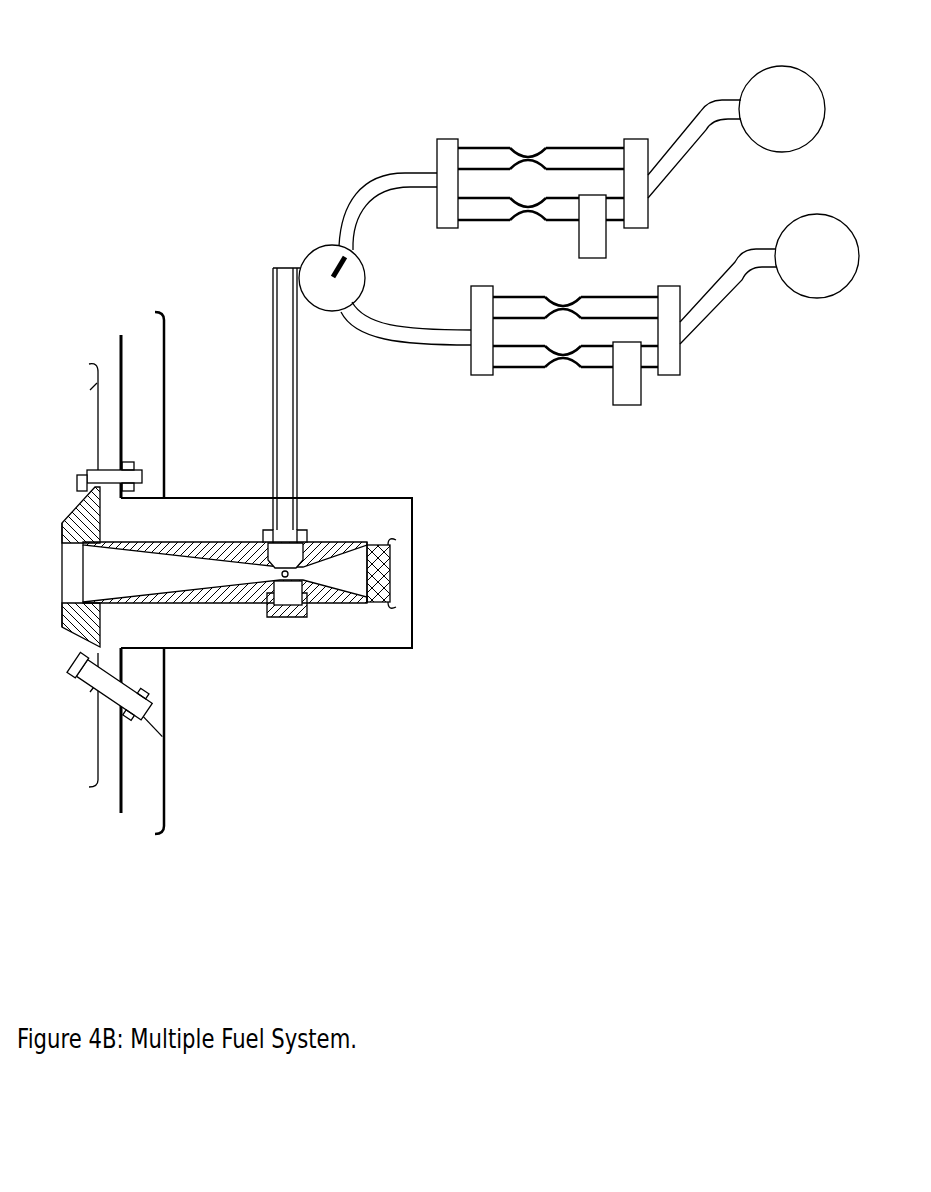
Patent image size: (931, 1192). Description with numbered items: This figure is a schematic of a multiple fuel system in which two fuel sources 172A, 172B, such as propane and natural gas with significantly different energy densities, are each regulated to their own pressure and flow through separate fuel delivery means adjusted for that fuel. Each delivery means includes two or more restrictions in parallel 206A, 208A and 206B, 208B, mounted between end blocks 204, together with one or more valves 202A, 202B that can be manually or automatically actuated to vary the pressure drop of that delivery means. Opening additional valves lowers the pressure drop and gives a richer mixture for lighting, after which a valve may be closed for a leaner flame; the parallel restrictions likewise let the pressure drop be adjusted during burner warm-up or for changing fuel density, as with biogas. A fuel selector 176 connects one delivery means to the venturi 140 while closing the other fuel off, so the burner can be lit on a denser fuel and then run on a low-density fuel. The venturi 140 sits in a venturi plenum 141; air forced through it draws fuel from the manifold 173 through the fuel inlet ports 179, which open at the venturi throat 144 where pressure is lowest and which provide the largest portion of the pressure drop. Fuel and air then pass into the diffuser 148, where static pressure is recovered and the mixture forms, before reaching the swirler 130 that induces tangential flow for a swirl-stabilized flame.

The swirler 130 is at (380, 555).
The venturi 140 is at (318, 540).
The venturi plenum 141 is at (362, 510).
The venturi throat 144 is at (296, 578).
The diffuser 148 is at (170, 588).
The manifold 173 is at (288, 605).
The fuel inlet ports 179 is at (288, 587).
The fuel selector 176 is at (317, 260).
The first fuel source 172A is at (795, 85).
The second fuel source 172B is at (824, 240).
The valve 202A is at (597, 243).
The valve 202B is at (622, 390).
The manifold end block 204 is at (638, 219).
The restriction 206A is at (528, 150).
The restriction 206B is at (565, 295).
The restriction 208A is at (533, 220).
The restriction 208B is at (562, 367).